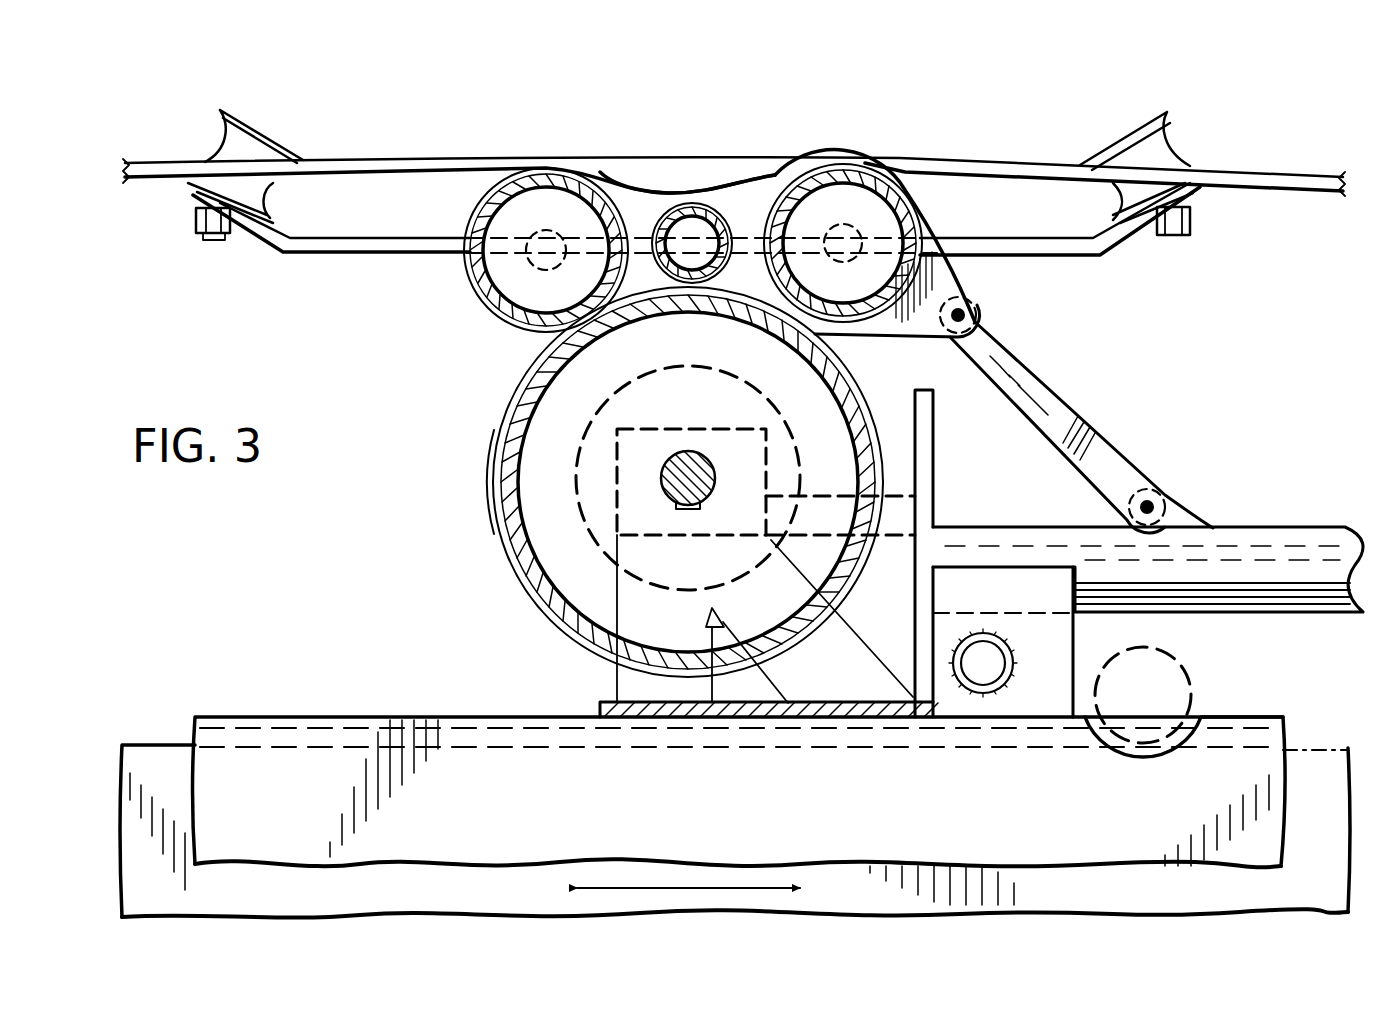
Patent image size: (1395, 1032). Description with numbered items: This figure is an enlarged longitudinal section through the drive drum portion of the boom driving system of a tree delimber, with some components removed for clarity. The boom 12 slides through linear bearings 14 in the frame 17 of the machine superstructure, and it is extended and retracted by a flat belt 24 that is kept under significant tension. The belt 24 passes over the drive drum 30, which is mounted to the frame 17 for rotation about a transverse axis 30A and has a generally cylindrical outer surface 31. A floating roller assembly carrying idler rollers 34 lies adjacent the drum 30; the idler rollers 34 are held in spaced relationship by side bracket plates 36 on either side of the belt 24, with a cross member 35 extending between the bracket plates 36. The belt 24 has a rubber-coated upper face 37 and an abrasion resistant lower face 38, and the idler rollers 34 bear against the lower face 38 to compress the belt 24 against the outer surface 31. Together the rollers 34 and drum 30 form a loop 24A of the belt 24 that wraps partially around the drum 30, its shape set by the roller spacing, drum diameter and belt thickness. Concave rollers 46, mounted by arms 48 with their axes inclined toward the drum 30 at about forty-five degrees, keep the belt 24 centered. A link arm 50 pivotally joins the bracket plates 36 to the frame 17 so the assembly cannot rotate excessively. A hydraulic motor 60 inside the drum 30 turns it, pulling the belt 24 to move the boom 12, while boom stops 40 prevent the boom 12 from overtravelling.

The boom 12 is at (168, 744).
The linear bearings 14 is at (1190, 668).
The frame 17 is at (392, 715).
The flat belt 24 is at (343, 158).
The loop 24A is at (490, 483).
The drive drum 30 is at (517, 393).
The transverse axis 30A is at (686, 474).
The outer surface 31 is at (540, 612).
The idler rollers 34 is at (468, 212).
The cross member 35 is at (665, 207).
The side bracket plates 36 is at (740, 200).
The upper face 37 is at (968, 160).
The lower face 38 is at (985, 182).
The boom stops 40 is at (1312, 527).
The concave rollers 46 is at (240, 112).
The arms 48 is at (357, 255).
The link arm 50 is at (1060, 380).
The hydraulic motor 60 is at (537, 567).